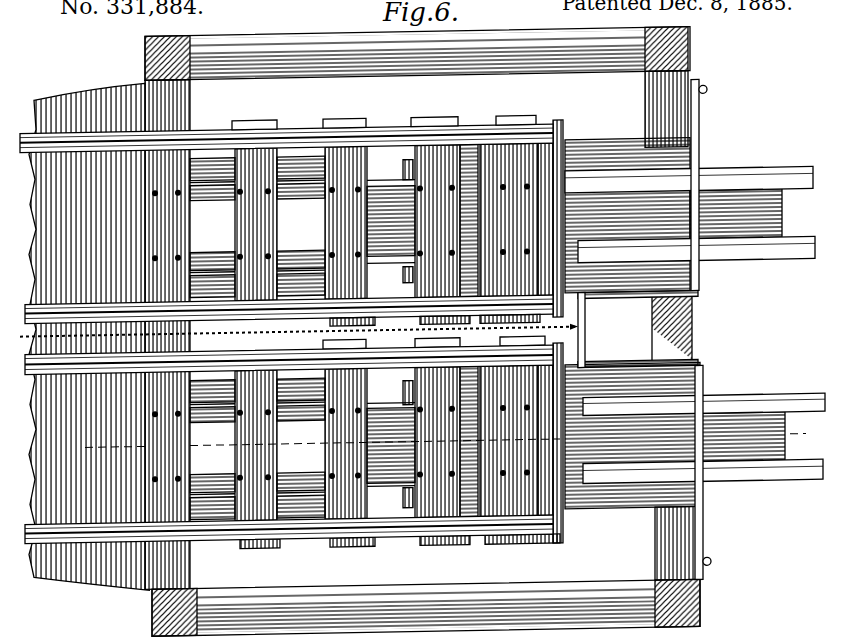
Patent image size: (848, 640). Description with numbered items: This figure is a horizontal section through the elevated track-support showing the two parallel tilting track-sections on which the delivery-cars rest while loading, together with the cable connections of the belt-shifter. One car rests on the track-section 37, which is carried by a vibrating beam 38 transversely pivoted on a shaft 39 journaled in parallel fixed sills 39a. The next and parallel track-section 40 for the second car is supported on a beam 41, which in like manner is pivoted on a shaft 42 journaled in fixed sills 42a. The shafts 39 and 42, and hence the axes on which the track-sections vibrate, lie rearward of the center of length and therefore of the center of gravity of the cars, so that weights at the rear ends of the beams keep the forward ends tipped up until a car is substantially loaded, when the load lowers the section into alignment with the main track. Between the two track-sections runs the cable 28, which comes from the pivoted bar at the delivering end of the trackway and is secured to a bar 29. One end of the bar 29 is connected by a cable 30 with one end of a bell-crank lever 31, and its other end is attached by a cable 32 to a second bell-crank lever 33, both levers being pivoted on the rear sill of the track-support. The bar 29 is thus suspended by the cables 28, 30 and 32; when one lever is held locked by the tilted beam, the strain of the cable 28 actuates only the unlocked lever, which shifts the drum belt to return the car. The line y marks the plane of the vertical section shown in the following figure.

The cable 28 is at (299, 326).
The bar 29 is at (585, 324).
The cable 30 is at (622, 372).
The bell-crank lever 31 is at (703, 395).
The cable 32 is at (638, 301).
The bell-crank lever 33 is at (700, 296).
The track-section 37 is at (315, 535).
The vibrating beam 38 is at (488, 444).
The shaft 39 is at (408, 515).
The fixed sills 39a is at (419, 445).
The track-section 40 is at (298, 143).
The beam 41 is at (308, 197).
The shaft 42 is at (406, 167).
The fixed sills 42a is at (418, 223).
The section line y y is at (443, 441).